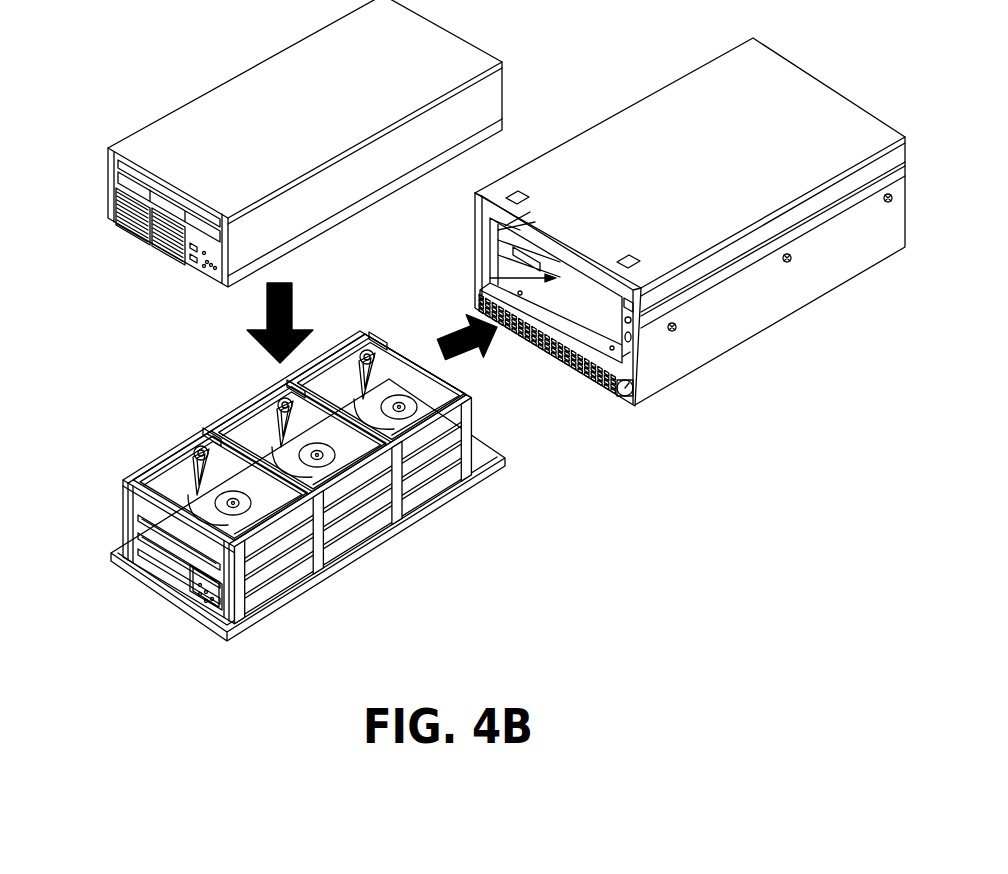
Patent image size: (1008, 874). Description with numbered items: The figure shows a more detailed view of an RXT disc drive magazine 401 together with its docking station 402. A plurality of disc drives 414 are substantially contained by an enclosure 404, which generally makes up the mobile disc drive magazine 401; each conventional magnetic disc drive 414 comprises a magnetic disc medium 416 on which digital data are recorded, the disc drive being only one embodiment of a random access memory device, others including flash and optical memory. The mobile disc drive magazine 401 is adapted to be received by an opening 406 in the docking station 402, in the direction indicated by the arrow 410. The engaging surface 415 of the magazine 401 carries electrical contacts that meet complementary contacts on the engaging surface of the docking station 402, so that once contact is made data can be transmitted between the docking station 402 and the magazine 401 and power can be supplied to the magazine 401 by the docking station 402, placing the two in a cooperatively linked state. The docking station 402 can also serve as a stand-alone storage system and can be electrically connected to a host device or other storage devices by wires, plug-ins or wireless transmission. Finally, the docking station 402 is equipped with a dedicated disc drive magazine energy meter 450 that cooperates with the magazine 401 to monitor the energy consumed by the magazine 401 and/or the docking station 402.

The mobile disc drive magazine 401 is at (130, 477).
The docking station 402 is at (623, 110).
The enclosure 404 is at (255, 62).
The opening 406 is at (490, 277).
The arrow 410 is at (476, 350).
The disc drive 414 is at (185, 445).
The engaging surface 415 is at (468, 390).
The magnetic disc medium 416 is at (407, 387).
The disc drive magazine energy meter 450 is at (642, 397).